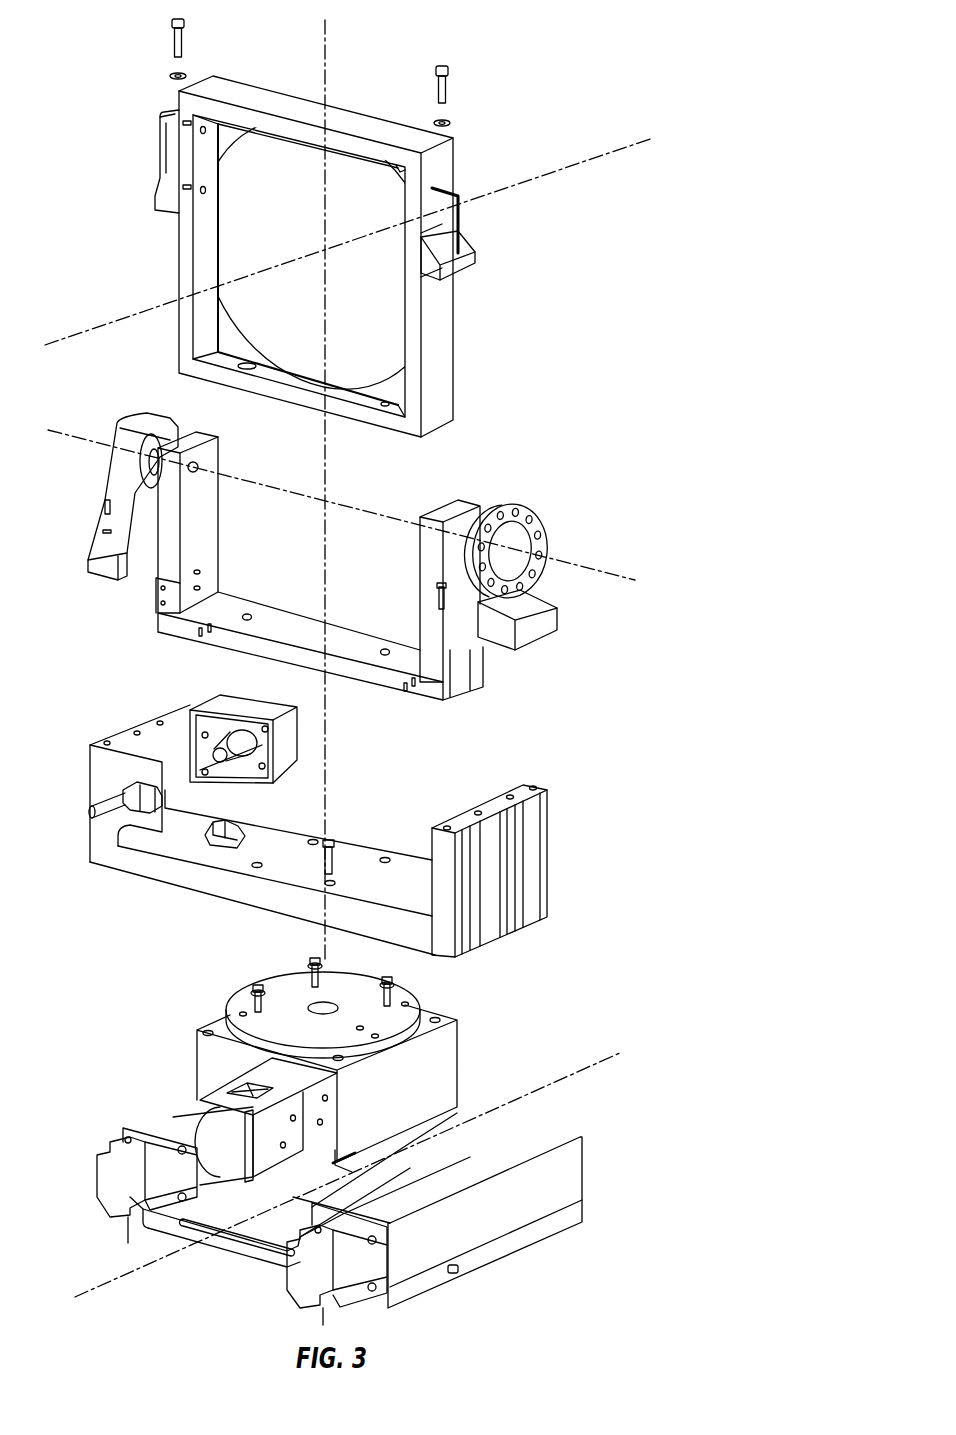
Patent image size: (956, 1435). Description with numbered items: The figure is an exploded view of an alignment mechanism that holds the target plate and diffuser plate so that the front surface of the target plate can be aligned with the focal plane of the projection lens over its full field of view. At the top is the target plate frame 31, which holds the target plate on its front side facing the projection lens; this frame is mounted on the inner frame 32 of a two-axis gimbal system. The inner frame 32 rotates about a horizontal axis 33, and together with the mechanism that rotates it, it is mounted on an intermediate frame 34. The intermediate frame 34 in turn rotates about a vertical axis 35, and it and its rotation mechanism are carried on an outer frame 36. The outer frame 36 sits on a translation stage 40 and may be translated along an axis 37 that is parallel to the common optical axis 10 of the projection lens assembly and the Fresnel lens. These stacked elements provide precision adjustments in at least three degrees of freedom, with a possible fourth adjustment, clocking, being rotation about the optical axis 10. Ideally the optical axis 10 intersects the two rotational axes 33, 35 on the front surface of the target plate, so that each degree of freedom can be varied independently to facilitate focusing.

The optical axis 10 is at (567, 167).
The target plate frame 31 is at (177, 250).
The inner frame 32 is at (157, 622).
The horizontal axis 33 is at (590, 568).
The intermediate frame 34 is at (550, 863).
The vertical axis 35 is at (322, 950).
The outer frame 36 is at (195, 1072).
The translation axis 37 is at (112, 1278).
The translation stage 40 is at (590, 1187).